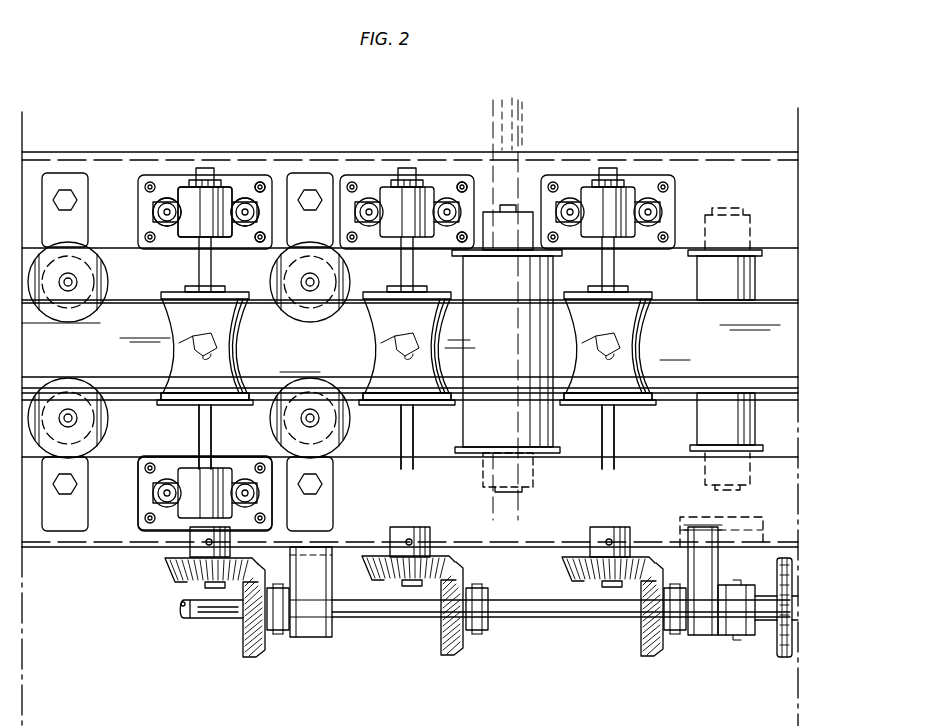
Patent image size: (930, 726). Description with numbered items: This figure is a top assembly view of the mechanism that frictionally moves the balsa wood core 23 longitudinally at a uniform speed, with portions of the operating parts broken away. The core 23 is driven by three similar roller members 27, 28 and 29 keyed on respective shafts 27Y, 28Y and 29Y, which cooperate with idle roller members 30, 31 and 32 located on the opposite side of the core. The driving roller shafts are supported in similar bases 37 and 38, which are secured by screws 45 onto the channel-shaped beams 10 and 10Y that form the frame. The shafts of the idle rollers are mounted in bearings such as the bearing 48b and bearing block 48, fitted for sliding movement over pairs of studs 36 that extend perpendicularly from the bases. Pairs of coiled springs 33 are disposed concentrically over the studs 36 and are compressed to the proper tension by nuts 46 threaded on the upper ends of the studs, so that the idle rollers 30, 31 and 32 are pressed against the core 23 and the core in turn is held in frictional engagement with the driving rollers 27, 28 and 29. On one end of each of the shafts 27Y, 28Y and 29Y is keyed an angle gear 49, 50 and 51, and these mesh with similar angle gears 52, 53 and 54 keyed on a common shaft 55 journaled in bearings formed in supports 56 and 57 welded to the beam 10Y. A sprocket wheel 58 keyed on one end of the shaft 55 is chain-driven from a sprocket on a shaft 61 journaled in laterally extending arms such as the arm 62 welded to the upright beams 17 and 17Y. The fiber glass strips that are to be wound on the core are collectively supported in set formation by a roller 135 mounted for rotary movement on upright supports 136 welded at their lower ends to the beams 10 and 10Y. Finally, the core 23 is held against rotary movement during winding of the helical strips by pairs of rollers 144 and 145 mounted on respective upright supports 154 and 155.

The channel-shaped beam 10 is at (343, 166).
The channel-shaped beam 10Y is at (66, 538).
The upright beam 17 is at (707, 214).
The upright beam 17Y is at (711, 522).
The core 23 is at (769, 303).
The roller member 27 is at (175, 405).
The shaft 27Y is at (212, 428).
The roller member 28 is at (376, 407).
The shaft 28Y is at (411, 427).
The roller member 29 is at (642, 406).
The shaft 29Y is at (610, 427).
The idle roller member 30 is at (178, 305).
The idle roller member 31 is at (382, 306).
The idle roller member 32 is at (590, 306).
The coiled spring 33 is at (242, 200).
The stud 36 is at (446, 205).
The base 37 is at (160, 182).
The base 38 is at (162, 524).
The screw 45 is at (262, 233).
The nut 46 is at (645, 205).
The bearing block 48 is at (198, 472).
The bearing 48b is at (186, 231).
The angle gear 49 is at (182, 578).
The angle gear 50 is at (390, 582).
The angle gear 51 is at (597, 583).
The angle gear 52 is at (248, 645).
The angle gear 53 is at (466, 636).
The angle gear 54 is at (646, 632).
The common shaft 55 is at (534, 617).
The support 56 is at (300, 640).
The support 57 is at (709, 597).
The sprocket wheel 58 is at (778, 632).
The shaft 61 is at (196, 615).
The laterally extending arm 62 is at (728, 633).
The roller 135 is at (507, 310).
The upright support 136 is at (506, 218).
The roller 144 is at (86, 390).
The roller 145 is at (312, 388).
The upright support 154 is at (62, 180).
The upright support 155 is at (309, 180).